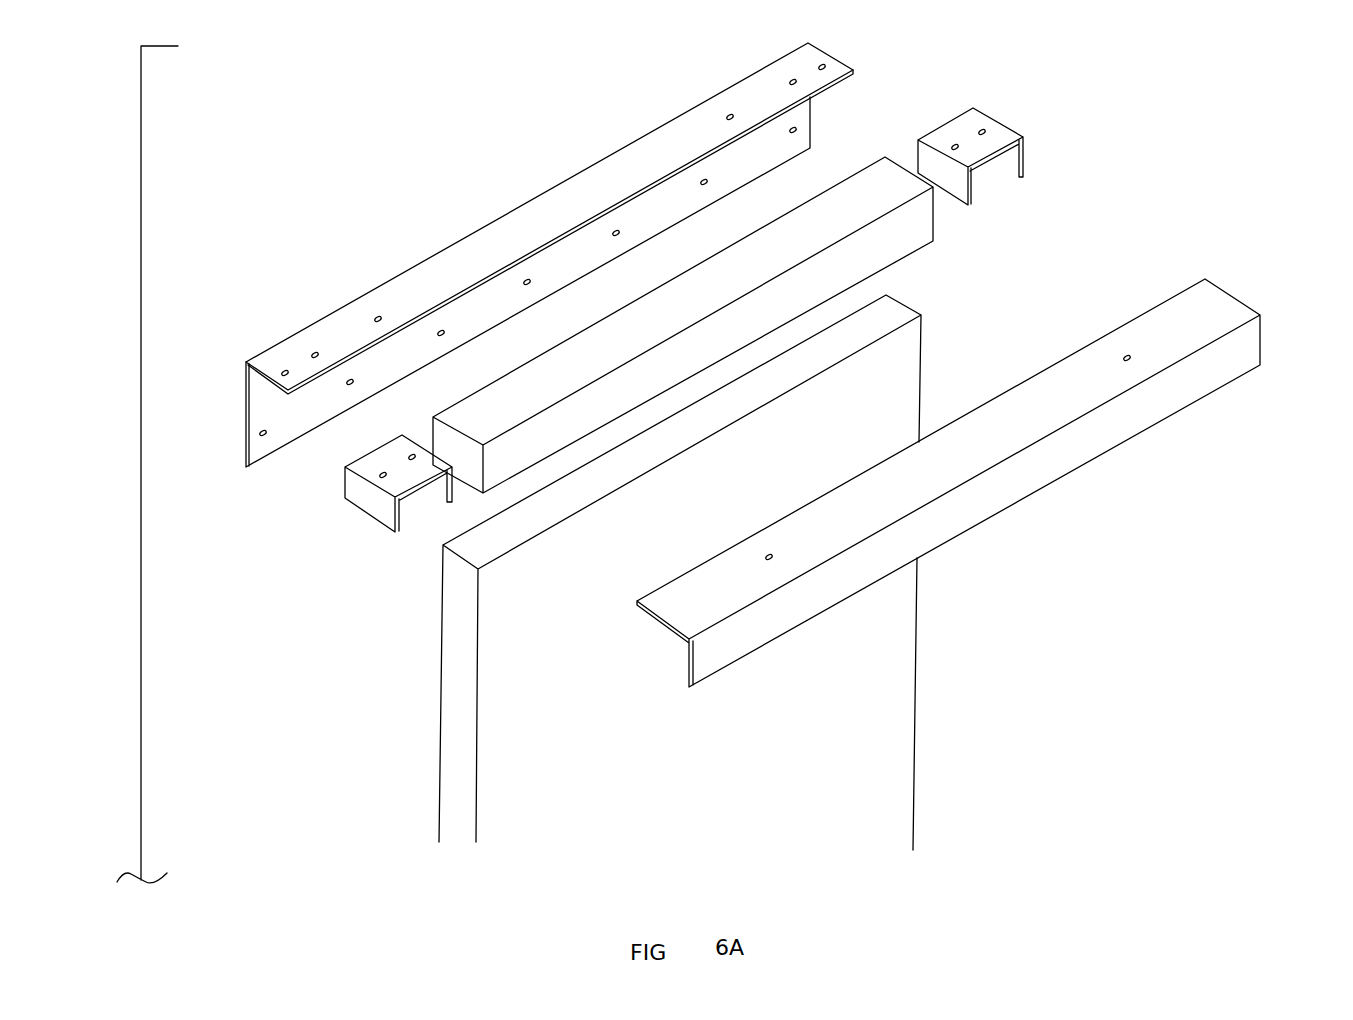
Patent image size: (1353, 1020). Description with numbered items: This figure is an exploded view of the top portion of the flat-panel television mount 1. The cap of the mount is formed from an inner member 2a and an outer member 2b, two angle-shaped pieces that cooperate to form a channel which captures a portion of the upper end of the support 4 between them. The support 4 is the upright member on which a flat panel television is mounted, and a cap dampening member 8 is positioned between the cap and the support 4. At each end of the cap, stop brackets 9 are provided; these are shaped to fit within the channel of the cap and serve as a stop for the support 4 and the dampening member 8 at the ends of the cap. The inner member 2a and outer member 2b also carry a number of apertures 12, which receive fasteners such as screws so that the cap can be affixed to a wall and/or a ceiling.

The flat-panel television mount 1 is at (139, 464).
The inner member 2a is at (247, 415).
The outer member 2b is at (1264, 346).
The support 4 is at (921, 626).
The cap dampening member 8 is at (935, 217).
The stop brackets 9 is at (345, 482).
The apertures 12 is at (527, 282).